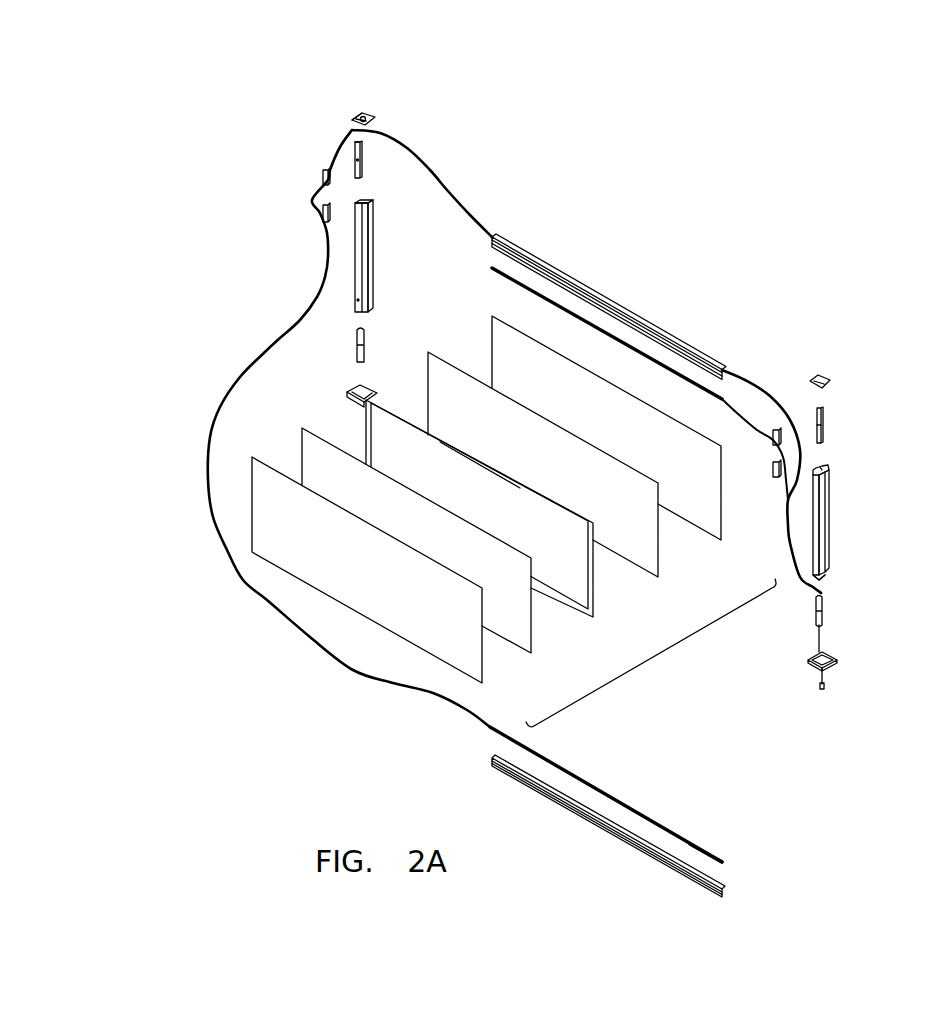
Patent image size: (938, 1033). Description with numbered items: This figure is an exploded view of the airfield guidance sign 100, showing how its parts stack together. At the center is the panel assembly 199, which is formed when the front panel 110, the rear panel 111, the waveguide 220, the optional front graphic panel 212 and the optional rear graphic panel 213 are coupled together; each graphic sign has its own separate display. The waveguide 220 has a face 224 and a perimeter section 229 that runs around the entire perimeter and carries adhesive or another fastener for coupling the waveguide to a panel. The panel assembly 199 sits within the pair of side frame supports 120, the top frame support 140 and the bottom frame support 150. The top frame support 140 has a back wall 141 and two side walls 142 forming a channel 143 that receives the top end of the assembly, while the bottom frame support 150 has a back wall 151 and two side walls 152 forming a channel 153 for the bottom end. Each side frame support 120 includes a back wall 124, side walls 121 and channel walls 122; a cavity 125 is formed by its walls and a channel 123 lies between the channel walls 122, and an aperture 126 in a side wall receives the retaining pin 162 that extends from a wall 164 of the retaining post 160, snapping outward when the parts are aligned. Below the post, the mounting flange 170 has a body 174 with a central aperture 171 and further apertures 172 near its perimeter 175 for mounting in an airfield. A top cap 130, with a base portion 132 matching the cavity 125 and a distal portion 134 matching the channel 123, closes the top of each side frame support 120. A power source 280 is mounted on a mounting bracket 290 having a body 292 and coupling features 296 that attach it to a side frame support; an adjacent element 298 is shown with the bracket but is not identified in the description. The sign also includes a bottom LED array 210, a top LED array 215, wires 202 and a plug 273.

The airfield guidance sign 100 is at (912, 260).
The front panel 110 is at (415, 643).
The rear panel 111 is at (722, 503).
The side frame support 120 is at (872, 506).
The side wall 121 is at (568, 367).
The channel wall 122 is at (373, 247).
The channel 123 is at (373, 230).
The back wall 124 is at (830, 510).
The cavity 125 is at (829, 467).
The aperture 126 is at (832, 563).
The top cap 130 is at (830, 380).
The base portion 132 is at (352, 117).
The distal portion 134 is at (375, 118).
The top frame support 140 is at (609, 289).
The back wall 141 is at (578, 285).
The side walls 142 is at (545, 267).
The channel 143 is at (724, 369).
The bottom frame support 150 is at (669, 829).
The back wall 151 is at (607, 833).
The side walls 152 is at (542, 795).
The channel 153 is at (492, 758).
The retaining post 160 is at (809, 620).
The retaining pin 162 is at (820, 608).
The wall 164 is at (820, 636).
The mounting flange 170 is at (850, 665).
The central aperture 171 is at (367, 388).
The apertures 172 is at (808, 659).
The body 174 is at (355, 388).
The perimeter 175 is at (350, 397).
The panel assembly 199 is at (660, 658).
The wires 202 is at (205, 470).
The bottom LED array 210 is at (722, 862).
The front graphic panel 212 is at (533, 652).
The rear graphic panel 213 is at (657, 577).
The top LED array 215 is at (724, 392).
The waveguide 220 is at (514, 529).
The face 224 is at (512, 514).
The perimeter section 229 is at (568, 550).
The plug 273 is at (825, 687).
The power source 280 is at (323, 214).
The mounting bracket 290 is at (825, 432).
The body 292 is at (823, 410).
The coupling features 296 is at (362, 148).
The top strip face 298 is at (362, 167).